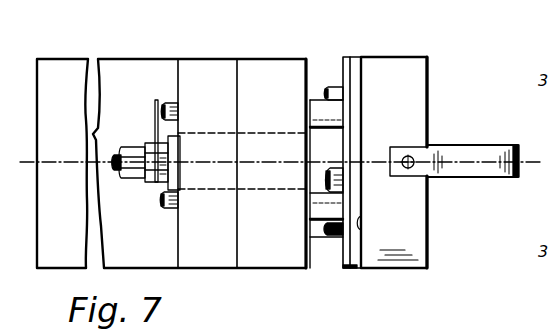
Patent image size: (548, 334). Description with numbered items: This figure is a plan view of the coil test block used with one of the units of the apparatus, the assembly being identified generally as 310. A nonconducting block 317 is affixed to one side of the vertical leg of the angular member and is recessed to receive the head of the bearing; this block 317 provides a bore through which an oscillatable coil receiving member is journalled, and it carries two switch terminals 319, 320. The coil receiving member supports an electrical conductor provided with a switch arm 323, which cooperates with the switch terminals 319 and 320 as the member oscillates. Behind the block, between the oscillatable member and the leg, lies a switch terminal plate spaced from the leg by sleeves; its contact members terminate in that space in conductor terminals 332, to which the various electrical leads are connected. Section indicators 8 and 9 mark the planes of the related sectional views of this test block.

The housing 310 is at (171, 162).
The nonconducting block 317 is at (207, 67).
The switch terminal 319 is at (166, 101).
The switch terminal 320 is at (167, 210).
The switch arm 323 is at (152, 131).
The conductor terminals 332 is at (341, 179).
The section line 8- 8 is at (355, 295).
The section line 9- 9 is at (23, 162).